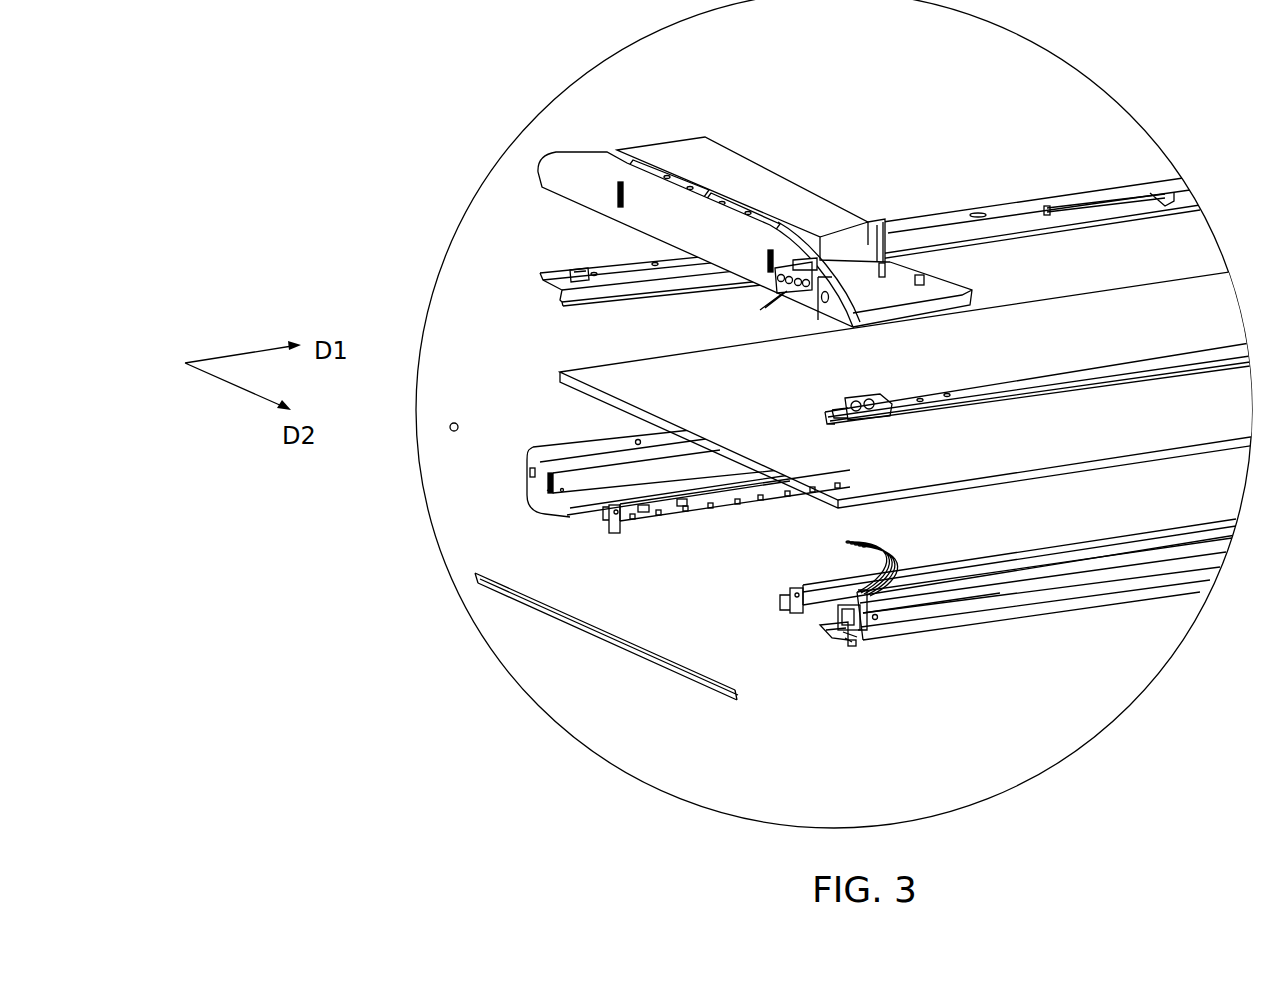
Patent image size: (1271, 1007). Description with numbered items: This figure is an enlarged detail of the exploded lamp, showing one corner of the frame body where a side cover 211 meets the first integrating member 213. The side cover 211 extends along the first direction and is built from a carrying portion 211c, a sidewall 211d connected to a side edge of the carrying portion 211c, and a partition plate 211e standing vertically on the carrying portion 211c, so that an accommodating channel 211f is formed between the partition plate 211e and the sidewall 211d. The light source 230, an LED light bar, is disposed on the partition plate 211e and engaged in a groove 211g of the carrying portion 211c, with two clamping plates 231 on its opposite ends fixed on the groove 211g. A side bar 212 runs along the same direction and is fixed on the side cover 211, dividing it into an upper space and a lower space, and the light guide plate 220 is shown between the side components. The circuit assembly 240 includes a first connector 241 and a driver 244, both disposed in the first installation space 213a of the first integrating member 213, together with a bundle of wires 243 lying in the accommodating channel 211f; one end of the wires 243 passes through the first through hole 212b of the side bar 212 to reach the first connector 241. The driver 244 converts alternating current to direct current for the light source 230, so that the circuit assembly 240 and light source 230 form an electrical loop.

The side cover 211 is at (553, 453).
The carrying portion 211c is at (825, 627).
The sidewall 211d is at (910, 615).
The partition plate 211e is at (843, 640).
The accommodating channel 211f is at (852, 662).
The groove 211g is at (815, 623).
The side bar 212 is at (617, 267).
The first through hole 212b is at (890, 411).
The first integrating member 213 is at (582, 163).
The first installation space 213a is at (910, 297).
The light guide plate 220 is at (993, 458).
The light source 230 is at (668, 510).
The clamping plate 231 is at (612, 535).
The circuit assembly 240 is at (788, 190).
The first connector 241 is at (807, 297).
The bundle of wires 243 is at (907, 557).
The driver 244 is at (712, 155).